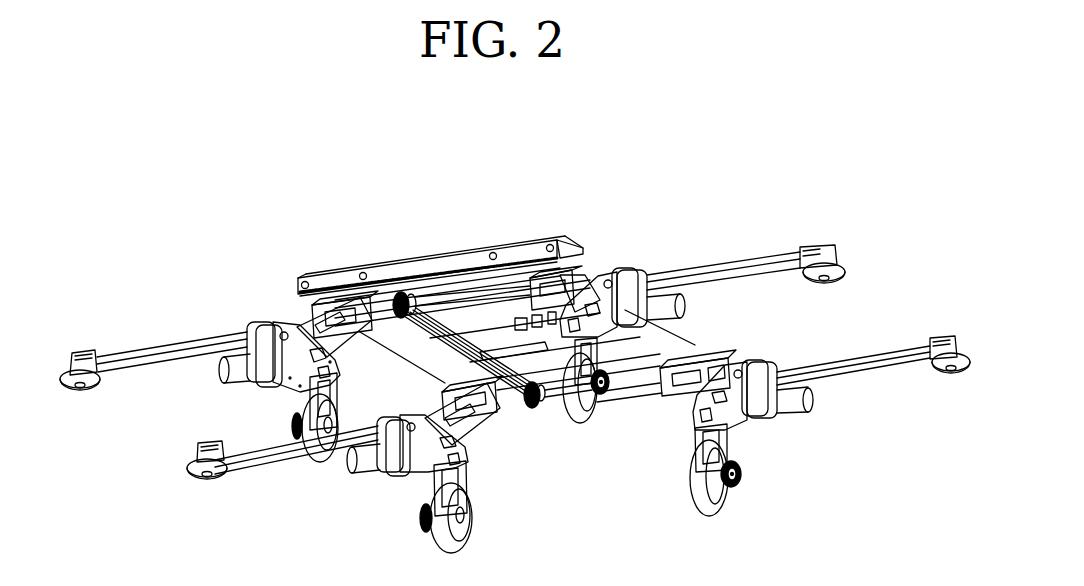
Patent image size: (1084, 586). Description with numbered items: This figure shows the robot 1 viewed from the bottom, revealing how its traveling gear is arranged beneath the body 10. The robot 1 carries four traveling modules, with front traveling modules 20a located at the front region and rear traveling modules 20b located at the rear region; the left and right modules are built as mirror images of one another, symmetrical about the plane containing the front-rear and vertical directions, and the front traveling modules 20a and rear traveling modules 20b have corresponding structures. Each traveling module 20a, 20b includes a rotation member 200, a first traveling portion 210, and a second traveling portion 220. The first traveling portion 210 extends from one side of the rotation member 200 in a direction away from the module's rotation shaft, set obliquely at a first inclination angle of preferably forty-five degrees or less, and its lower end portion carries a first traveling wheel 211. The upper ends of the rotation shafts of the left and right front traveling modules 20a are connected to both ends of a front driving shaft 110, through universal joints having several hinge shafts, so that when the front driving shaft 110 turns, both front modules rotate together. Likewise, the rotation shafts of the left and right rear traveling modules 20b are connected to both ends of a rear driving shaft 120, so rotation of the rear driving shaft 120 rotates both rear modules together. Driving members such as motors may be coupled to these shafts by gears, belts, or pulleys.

The robot 1 is at (157, 148).
The body 10 is at (440, 253).
The front driving shaft 110 is at (378, 310).
The rear driving shaft 120 is at (638, 382).
The front traveling module 20a is at (258, 308).
The rear traveling module 20b is at (406, 493).
The rotation member 200 is at (617, 267).
The first traveling portion 210 is at (557, 384).
The first traveling wheel 211 is at (582, 420).
The second traveling portion 220 is at (752, 266).